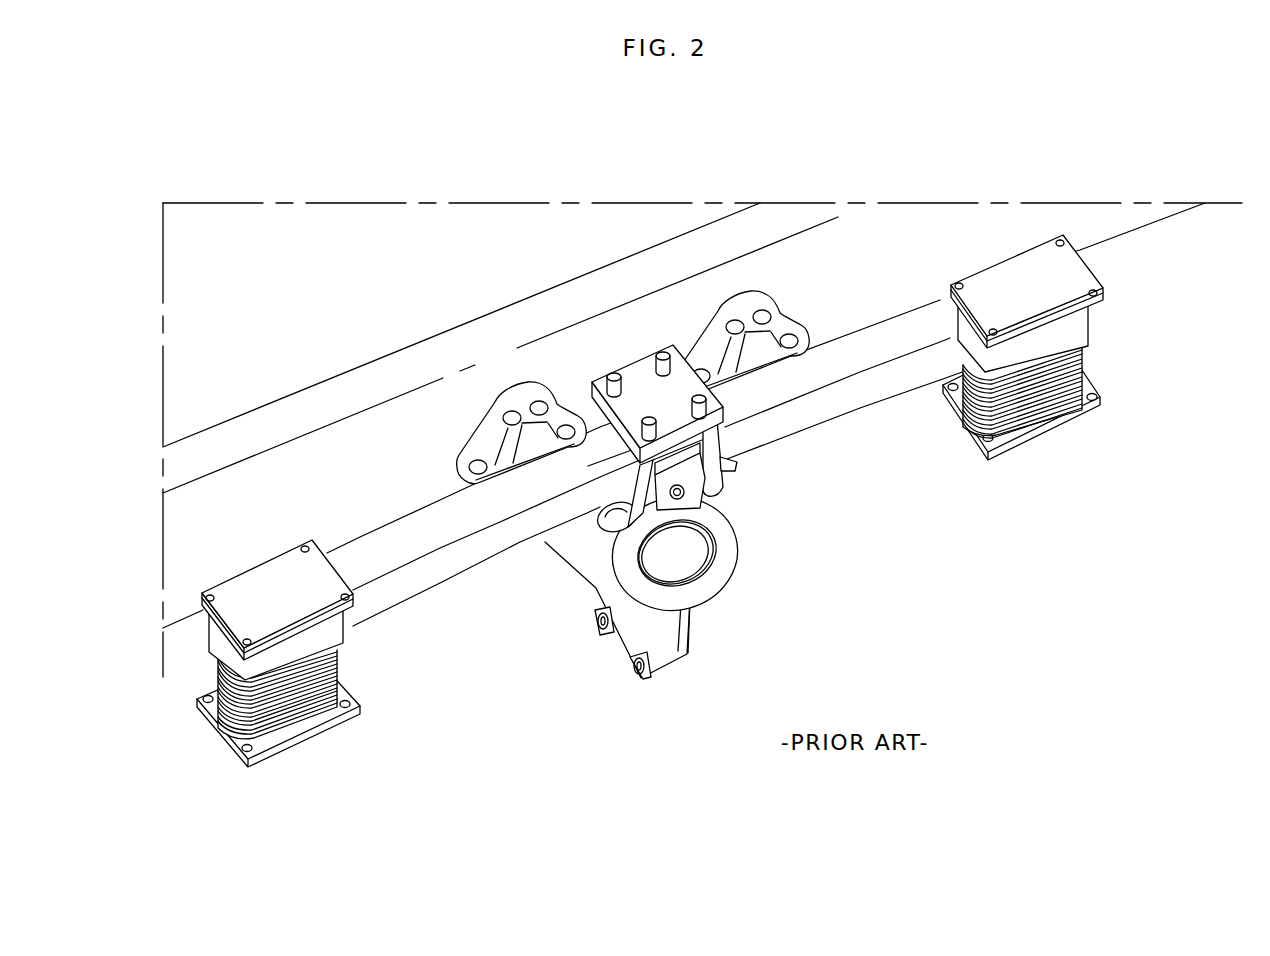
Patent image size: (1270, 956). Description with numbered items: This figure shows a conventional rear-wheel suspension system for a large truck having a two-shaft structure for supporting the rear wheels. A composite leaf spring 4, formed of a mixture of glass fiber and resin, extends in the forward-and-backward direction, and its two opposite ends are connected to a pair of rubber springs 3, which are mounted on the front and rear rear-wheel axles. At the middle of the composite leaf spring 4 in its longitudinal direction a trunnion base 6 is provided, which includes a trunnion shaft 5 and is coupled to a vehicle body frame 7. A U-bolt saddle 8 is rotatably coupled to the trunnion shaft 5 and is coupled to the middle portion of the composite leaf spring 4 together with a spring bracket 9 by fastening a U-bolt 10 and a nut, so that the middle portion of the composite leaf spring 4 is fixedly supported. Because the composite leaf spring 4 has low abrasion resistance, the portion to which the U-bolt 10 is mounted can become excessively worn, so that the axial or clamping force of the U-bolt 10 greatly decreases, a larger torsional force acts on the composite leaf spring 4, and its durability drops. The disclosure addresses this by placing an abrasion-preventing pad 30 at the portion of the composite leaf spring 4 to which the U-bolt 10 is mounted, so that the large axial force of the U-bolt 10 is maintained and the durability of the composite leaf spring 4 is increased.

The rubber springs 3 is at (308, 707).
The composite leaf spring 4 is at (452, 563).
The trunnion shaft 5 is at (685, 558).
The trunnion base 6 is at (667, 632).
The vehicle body frame 7 is at (638, 273).
The U-bolt saddle 8 is at (612, 548).
The spring bracket 9 is at (640, 400).
The U-bolt 10 is at (722, 498).
The abrasion-preventing pad 30 is at (717, 443).